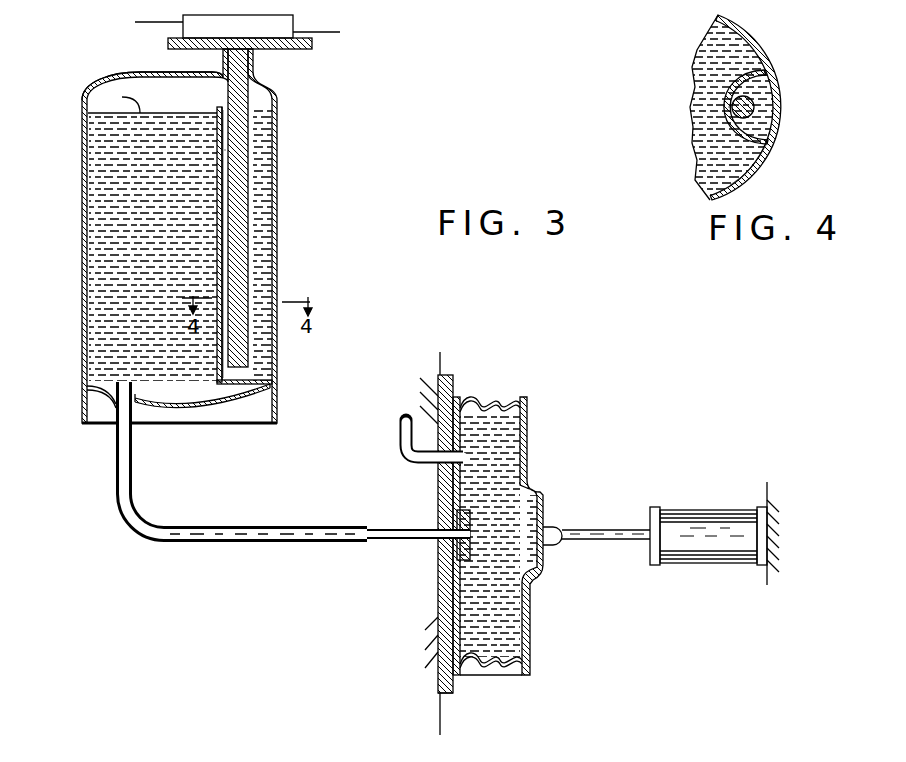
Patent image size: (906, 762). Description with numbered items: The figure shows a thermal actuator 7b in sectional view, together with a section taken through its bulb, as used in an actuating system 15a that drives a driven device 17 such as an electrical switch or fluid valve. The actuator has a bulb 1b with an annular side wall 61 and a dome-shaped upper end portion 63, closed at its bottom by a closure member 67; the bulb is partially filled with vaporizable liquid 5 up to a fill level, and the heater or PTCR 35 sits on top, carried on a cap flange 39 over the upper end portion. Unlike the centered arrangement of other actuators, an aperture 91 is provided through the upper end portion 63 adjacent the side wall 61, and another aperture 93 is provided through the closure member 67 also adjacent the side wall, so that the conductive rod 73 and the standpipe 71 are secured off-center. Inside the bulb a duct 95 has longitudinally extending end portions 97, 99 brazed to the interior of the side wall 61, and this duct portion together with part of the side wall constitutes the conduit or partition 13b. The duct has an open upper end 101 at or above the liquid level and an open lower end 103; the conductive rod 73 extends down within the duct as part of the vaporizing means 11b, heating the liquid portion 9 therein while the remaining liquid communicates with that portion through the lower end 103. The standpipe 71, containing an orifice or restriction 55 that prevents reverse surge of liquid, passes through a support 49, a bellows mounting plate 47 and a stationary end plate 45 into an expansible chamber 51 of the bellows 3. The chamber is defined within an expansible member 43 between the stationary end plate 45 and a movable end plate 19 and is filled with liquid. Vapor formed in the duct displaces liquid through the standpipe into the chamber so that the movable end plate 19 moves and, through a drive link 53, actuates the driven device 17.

In FIG. 3, the bulb 1b is at (196, 253).
In FIG. 4, the bulb 1b is at (730, 107).
In FIG. 3, the bellows 3 is at (525, 508).
In FIG. 3, the vaporizable liquid 5 is at (95, 274).
In FIG. 4, the vaporizable liquid 5 is at (712, 163).
In FIG. 3, the thermal actuator 7b is at (260, 195).
In FIG. 3, the liquid portion 9 is at (226, 143).
In FIG. 3, the vaporizing means 11b is at (128, 28).
In FIG. 3, the conduit or partition 13b is at (218, 277).
In FIG. 4, the conduit or partition 13b is at (721, 118).
In FIG. 3, the actuating system 15a is at (558, 484).
In FIG. 3, the driven device 17 is at (713, 547).
In FIG. 3, the movable end plate 19 is at (530, 652).
In FIG. 3, the PTCR 35 is at (275, 22).
In FIG. 3, the cap flange 39 is at (136, 22).
In FIG. 3, the expansible member 43 is at (500, 397).
In FIG. 3, the stationary end plate 45 is at (455, 397).
In FIG. 3, the bellows mounting plate 47 is at (453, 692).
In FIG. 3, the support 49 is at (430, 668).
In FIG. 3, the expansible chamber 51 is at (507, 576).
In FIG. 3, the drive link 53 is at (612, 538).
In FIG. 3, the orifice or restriction 55 is at (374, 543).
In FIG. 3, the annular side wall 61 is at (170, 236).
In FIG. 4, the annular side wall 61 is at (758, 46).
In FIG. 3, the upper end portion 63 is at (120, 78).
In FIG. 3, the closure member 67 is at (186, 406).
In FIG. 3, the standpipe 71 is at (272, 542).
In FIG. 3, the conductive rod 73 is at (237, 210).
In FIG. 4, the conductive rod 73 is at (756, 107).
In FIG. 3, the aperture 91 is at (256, 63).
In FIG. 3, the aperture 93 is at (113, 405).
In FIG. 3, the duct 95 is at (218, 246).
In FIG. 4, the duct 95 is at (725, 98).
In FIG. 4, the side or end portion 97 is at (764, 146).
In FIG. 4, the side or end portion 99 is at (766, 73).
In FIG. 3, the upper end 101 is at (218, 107).
In FIG. 3, the lower end 103 is at (227, 391).